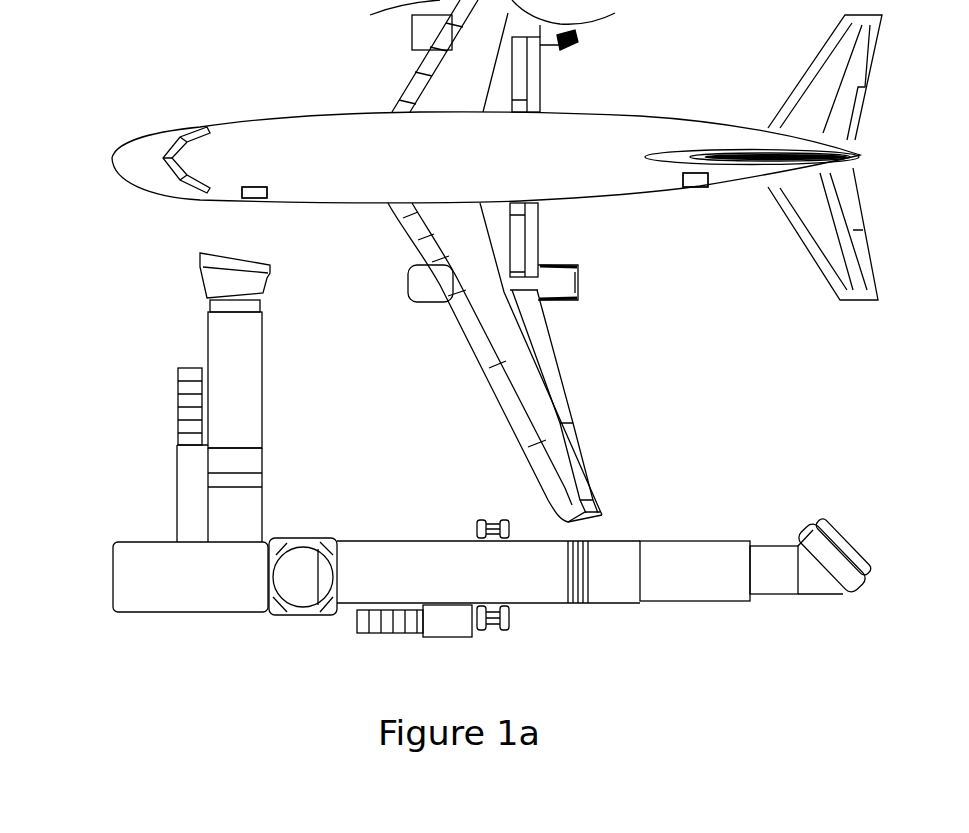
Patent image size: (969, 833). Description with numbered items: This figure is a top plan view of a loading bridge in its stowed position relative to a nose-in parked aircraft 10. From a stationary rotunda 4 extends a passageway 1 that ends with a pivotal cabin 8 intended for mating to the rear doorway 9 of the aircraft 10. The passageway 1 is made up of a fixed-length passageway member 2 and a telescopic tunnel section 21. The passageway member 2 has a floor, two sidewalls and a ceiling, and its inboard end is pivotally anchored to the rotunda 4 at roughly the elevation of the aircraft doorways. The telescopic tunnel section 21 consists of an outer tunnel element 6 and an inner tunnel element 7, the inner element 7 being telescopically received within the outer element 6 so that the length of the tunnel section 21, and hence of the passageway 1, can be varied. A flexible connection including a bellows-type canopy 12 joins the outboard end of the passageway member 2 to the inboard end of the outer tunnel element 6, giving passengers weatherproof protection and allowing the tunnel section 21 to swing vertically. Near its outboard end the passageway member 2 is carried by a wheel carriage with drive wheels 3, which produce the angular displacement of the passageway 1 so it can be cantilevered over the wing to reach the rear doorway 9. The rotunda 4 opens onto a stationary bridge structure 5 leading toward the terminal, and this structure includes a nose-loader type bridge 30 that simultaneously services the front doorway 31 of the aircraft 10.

The passageway 1 is at (459, 473).
The fixed-length passageway member 2 is at (403, 553).
The drive wheels 3 is at (497, 633).
The stationary rotunda 4 is at (313, 612).
The stationary bridge structure 5 is at (156, 397).
The outer tunnel element 6 is at (720, 602).
The inner tunnel element 7 is at (782, 588).
The pivotal cabin 8 is at (813, 525).
The rear doorway 9 is at (703, 188).
The aircraft 10 is at (500, 168).
The bellows-type canopy 12 is at (578, 604).
The telescopic tunnel section 21 is at (672, 590).
The nose-loader type bridge 30 is at (207, 348).
The front doorway 31 is at (248, 198).